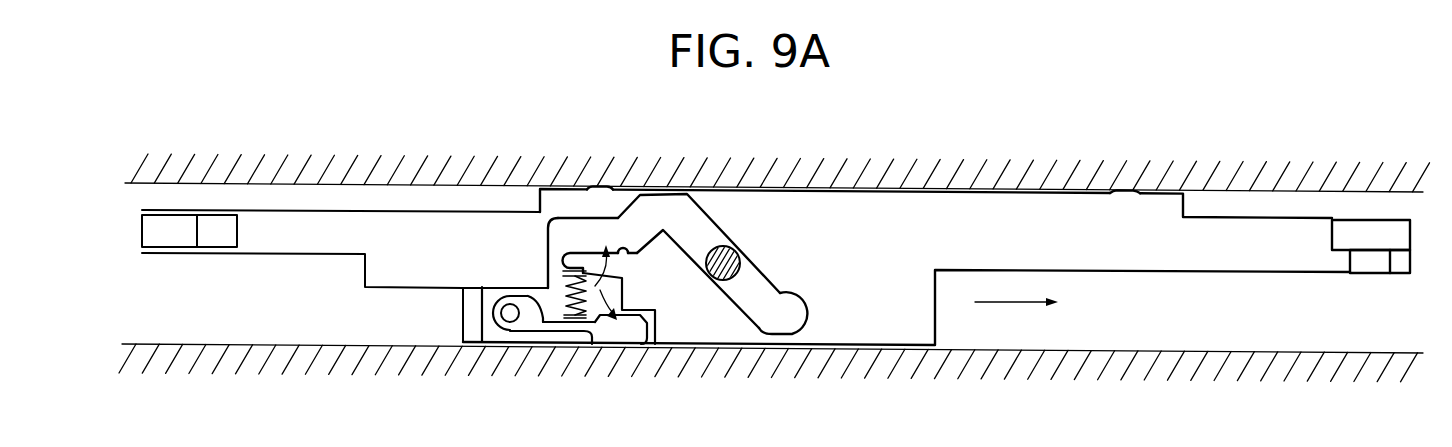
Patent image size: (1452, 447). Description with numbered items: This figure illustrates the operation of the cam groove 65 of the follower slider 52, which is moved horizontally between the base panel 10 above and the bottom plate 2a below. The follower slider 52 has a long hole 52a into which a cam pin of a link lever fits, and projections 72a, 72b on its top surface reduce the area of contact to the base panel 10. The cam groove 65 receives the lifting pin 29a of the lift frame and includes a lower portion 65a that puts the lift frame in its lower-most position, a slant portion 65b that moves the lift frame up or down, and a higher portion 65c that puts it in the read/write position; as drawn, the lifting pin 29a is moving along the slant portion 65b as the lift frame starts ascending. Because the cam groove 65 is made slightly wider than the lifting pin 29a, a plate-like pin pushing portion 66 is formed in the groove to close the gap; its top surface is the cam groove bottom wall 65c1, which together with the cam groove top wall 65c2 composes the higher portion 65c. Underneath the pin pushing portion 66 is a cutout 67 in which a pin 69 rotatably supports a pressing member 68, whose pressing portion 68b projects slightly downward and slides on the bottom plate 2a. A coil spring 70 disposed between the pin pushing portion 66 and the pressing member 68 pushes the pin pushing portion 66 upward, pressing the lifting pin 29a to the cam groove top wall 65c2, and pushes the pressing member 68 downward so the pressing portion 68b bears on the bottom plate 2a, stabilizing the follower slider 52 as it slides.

The bottom plate 2a is at (1130, 360).
The base panel 10 is at (263, 175).
The follower slider 52 is at (1013, 220).
The long hole 52a is at (1370, 265).
The projection 72a is at (1125, 191).
The projection 72b is at (603, 187).
The cam groove 65 is at (688, 218).
The lower portion 65a is at (803, 313).
The slant portion 65b is at (753, 280).
The higher portion 65c is at (562, 233).
The cam groove bottom wall 65c1 is at (625, 255).
The cam groove top wall 65c2 is at (583, 228).
The pin pushing portion 66 is at (573, 260).
The lifting pin 29a is at (740, 260).
The cutout 67 is at (545, 313).
The pressing member 68 is at (575, 332).
The pressing portion 68b is at (632, 332).
The pin 69 is at (512, 310).
The coil spring 70 is at (562, 283).